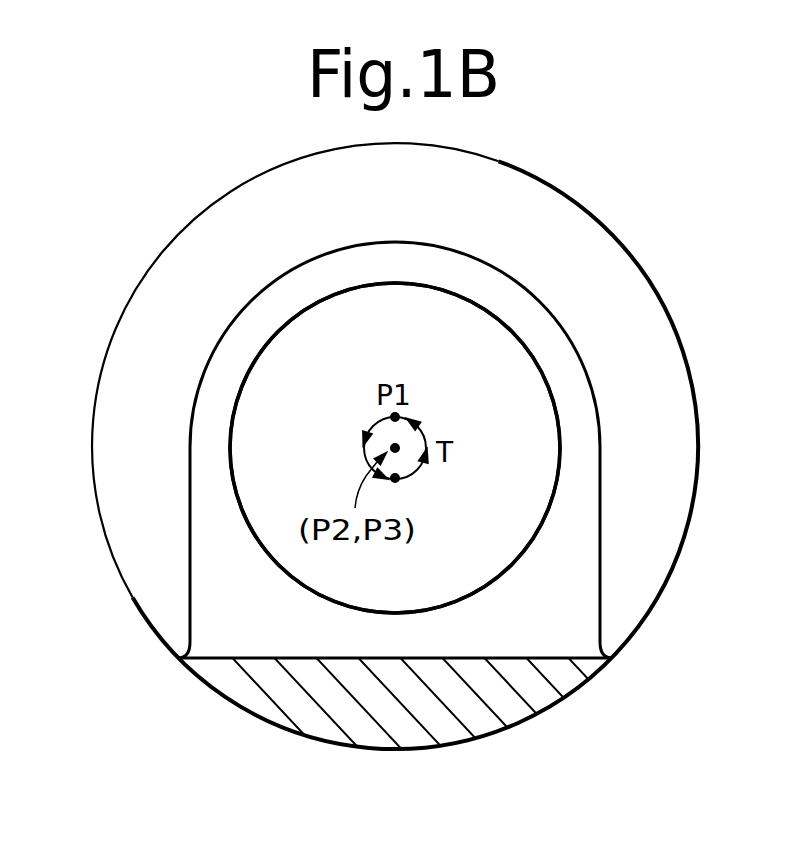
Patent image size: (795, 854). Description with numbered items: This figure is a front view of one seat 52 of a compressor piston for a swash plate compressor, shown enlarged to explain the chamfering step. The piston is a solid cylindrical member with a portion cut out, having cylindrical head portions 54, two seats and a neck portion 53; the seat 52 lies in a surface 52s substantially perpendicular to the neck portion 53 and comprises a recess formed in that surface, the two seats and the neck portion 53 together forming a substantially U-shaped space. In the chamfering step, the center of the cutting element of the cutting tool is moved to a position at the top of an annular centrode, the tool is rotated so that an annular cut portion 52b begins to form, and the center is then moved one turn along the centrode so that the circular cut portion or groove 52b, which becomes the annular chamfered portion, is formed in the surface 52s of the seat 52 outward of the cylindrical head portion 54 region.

The seat 52 is at (542, 355).
The annular cut portion 52b is at (500, 348).
The surface of the seat 52s is at (575, 397).
The neck portion 53 is at (538, 700).
The head portion 54 is at (667, 498).